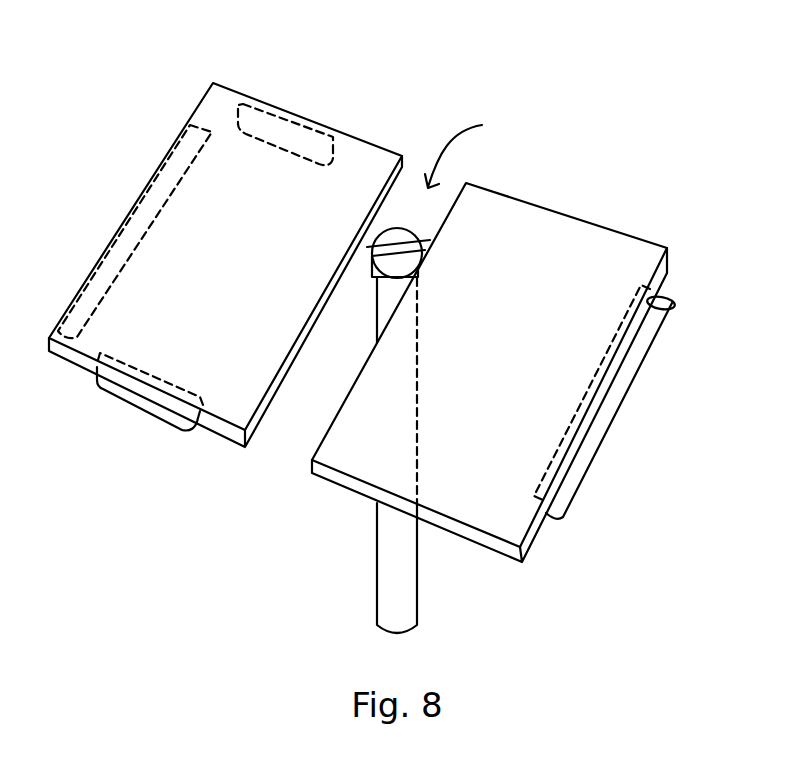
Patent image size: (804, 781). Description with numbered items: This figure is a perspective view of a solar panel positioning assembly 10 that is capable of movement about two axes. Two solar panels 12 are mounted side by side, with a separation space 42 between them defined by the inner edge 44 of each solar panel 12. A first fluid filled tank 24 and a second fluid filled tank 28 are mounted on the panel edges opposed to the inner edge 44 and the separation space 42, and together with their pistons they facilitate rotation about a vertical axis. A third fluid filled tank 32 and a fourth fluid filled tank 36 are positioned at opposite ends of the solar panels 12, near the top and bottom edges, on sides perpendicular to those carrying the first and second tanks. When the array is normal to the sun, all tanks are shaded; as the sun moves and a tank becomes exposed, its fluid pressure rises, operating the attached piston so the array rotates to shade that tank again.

The solar panel positioning assembly 10 is at (163, 47).
The solar panel 12 is at (250, 203).
The first fluid filled tank 24 is at (110, 257).
The second fluid filled tank 28 is at (585, 462).
The third fluid filled tank 32 is at (130, 393).
The fourth fluid filled tank 36 is at (277, 113).
The separation space 42 is at (468, 152).
The inner edge 44 is at (350, 385).